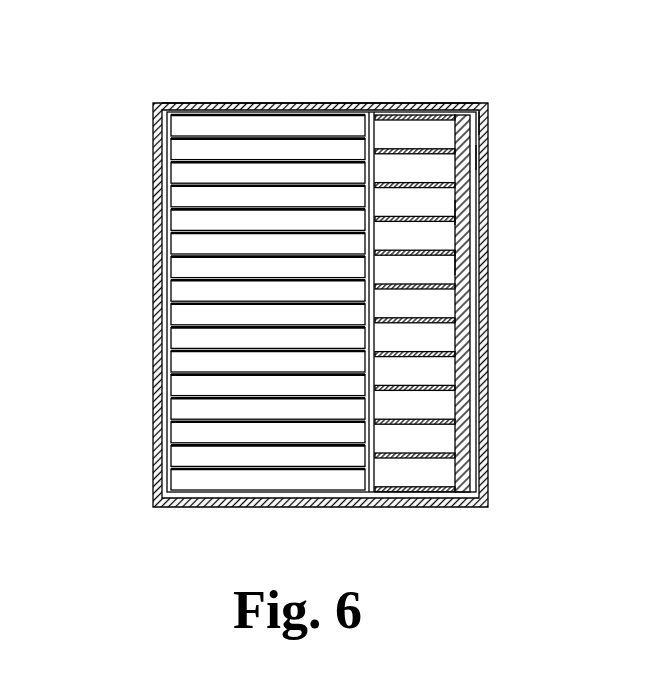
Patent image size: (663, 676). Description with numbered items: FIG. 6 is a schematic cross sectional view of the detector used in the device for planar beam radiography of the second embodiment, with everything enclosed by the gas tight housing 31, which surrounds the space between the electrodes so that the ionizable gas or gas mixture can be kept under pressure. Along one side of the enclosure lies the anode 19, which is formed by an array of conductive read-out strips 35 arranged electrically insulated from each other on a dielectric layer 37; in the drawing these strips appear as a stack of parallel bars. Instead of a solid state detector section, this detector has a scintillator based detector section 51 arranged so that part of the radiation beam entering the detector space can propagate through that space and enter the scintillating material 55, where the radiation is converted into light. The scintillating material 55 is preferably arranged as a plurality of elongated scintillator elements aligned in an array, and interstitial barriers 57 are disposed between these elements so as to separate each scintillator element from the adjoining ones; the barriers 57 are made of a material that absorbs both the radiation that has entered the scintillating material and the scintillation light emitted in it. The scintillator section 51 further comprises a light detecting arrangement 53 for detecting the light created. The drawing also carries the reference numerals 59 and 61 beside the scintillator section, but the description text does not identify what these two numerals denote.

The anode 19 is at (235, 105).
The gas tight housing 31 is at (160, 218).
The conductive read-out strips 35 is at (183, 120).
The dielectric layer 37 is at (165, 168).
The scintillator based detector section 51 is at (410, 105).
The light detecting arrangement 53 is at (463, 105).
The scintillating material 55 is at (443, 265).
The interstitial barriers 57 is at (443, 215).
The outer wall 59 is at (470, 125).
The inner panel 61 is at (474, 158).